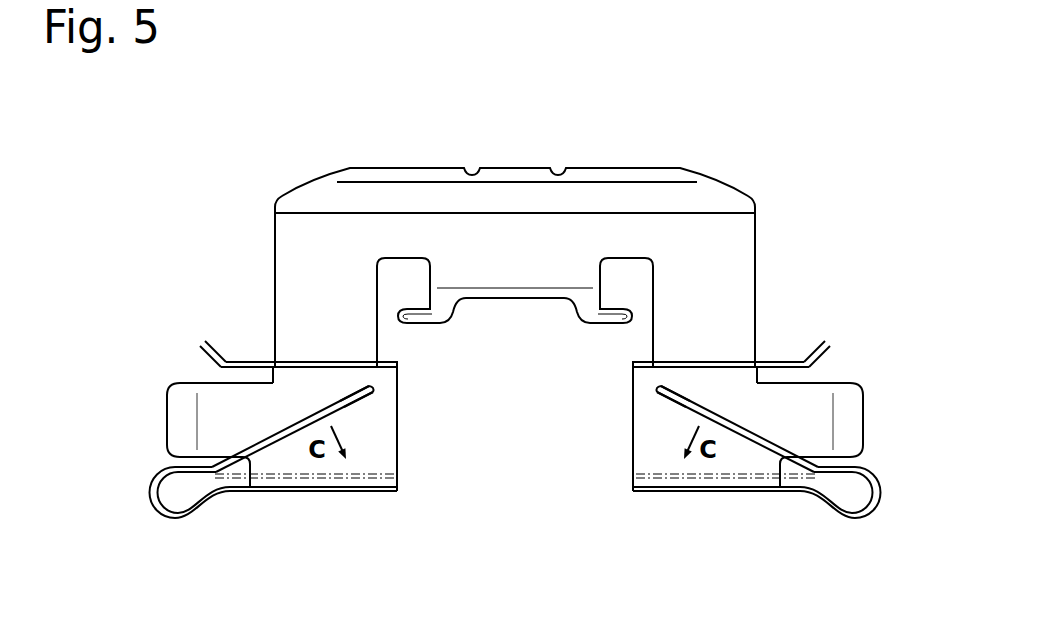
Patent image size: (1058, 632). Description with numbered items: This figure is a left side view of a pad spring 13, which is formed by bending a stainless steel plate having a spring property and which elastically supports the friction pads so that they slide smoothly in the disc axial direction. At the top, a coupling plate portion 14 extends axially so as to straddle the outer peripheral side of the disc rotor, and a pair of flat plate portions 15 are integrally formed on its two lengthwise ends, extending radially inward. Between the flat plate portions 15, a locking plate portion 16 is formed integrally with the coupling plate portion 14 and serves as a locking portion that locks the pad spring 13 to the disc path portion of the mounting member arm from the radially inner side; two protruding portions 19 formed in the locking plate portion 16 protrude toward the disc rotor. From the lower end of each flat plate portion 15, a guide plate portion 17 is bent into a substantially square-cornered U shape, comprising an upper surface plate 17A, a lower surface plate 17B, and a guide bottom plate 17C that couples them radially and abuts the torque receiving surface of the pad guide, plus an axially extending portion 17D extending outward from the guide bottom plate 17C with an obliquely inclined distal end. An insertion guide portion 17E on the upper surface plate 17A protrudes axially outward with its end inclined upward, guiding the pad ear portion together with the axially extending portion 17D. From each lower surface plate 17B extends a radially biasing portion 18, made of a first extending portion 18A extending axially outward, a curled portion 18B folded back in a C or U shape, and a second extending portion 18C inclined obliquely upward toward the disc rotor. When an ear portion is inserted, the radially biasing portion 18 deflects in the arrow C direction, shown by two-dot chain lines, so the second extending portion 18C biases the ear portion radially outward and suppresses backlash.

The pad spring 13 is at (460, 162).
The coupling plate portion 14 is at (565, 196).
The flat plate portion 15 is at (330, 280).
The locking plate portion 16 is at (520, 290).
The guide plate portion 17 is at (277, 410).
The upper surface plate 17A is at (397, 368).
The lower surface plate 17B is at (333, 491).
The guide bottom plate 17C is at (378, 452).
The axially extending portion 17D is at (190, 413).
The insertion guide portion 17E is at (232, 360).
The radially biasing portion 18 is at (312, 415).
The first extending portion 18A is at (235, 491).
The curled portion 18B is at (152, 510).
The second extending portion 18C is at (363, 405).
The protruding portion 19 is at (593, 323).